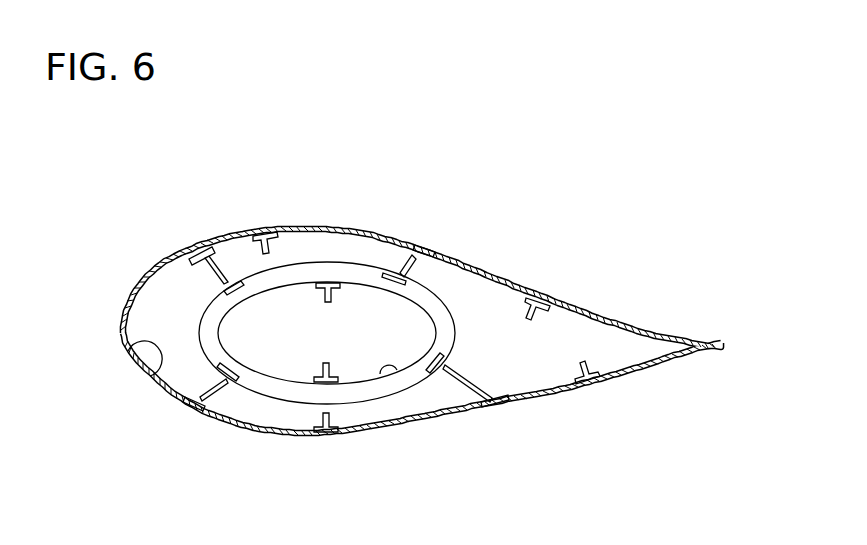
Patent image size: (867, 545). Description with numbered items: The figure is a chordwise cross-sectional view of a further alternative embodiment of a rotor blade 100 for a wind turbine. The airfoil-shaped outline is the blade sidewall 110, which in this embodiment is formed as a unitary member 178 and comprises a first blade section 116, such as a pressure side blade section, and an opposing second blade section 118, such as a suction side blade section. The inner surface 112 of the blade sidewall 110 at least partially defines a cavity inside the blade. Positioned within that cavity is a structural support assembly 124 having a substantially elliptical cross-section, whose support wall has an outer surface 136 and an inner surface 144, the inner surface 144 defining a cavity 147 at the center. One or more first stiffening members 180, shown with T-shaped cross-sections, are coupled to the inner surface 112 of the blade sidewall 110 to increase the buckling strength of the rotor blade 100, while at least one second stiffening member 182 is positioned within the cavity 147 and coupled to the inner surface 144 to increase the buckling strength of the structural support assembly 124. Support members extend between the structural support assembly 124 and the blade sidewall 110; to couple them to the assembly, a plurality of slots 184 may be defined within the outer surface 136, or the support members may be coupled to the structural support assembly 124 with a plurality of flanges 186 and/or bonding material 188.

The rotor blade 100 is at (379, 305).
The blade sidewall 110 is at (379, 306).
The inner surface 112 is at (128, 351).
The first blade section 116 is at (430, 155).
The second blade section 118 is at (548, 458).
The structural support assembly 124 is at (285, 314).
The outer surface 136 is at (207, 307).
The inner surface 144 is at (398, 372).
The cavity 147 is at (258, 343).
The unitary member 178 is at (402, 236).
The first stiffening member 180 is at (252, 236).
The second stiffening member 182 is at (344, 284).
The slots 184 is at (227, 272).
The flanges 186 is at (446, 367).
The bonding material 188 is at (243, 381).